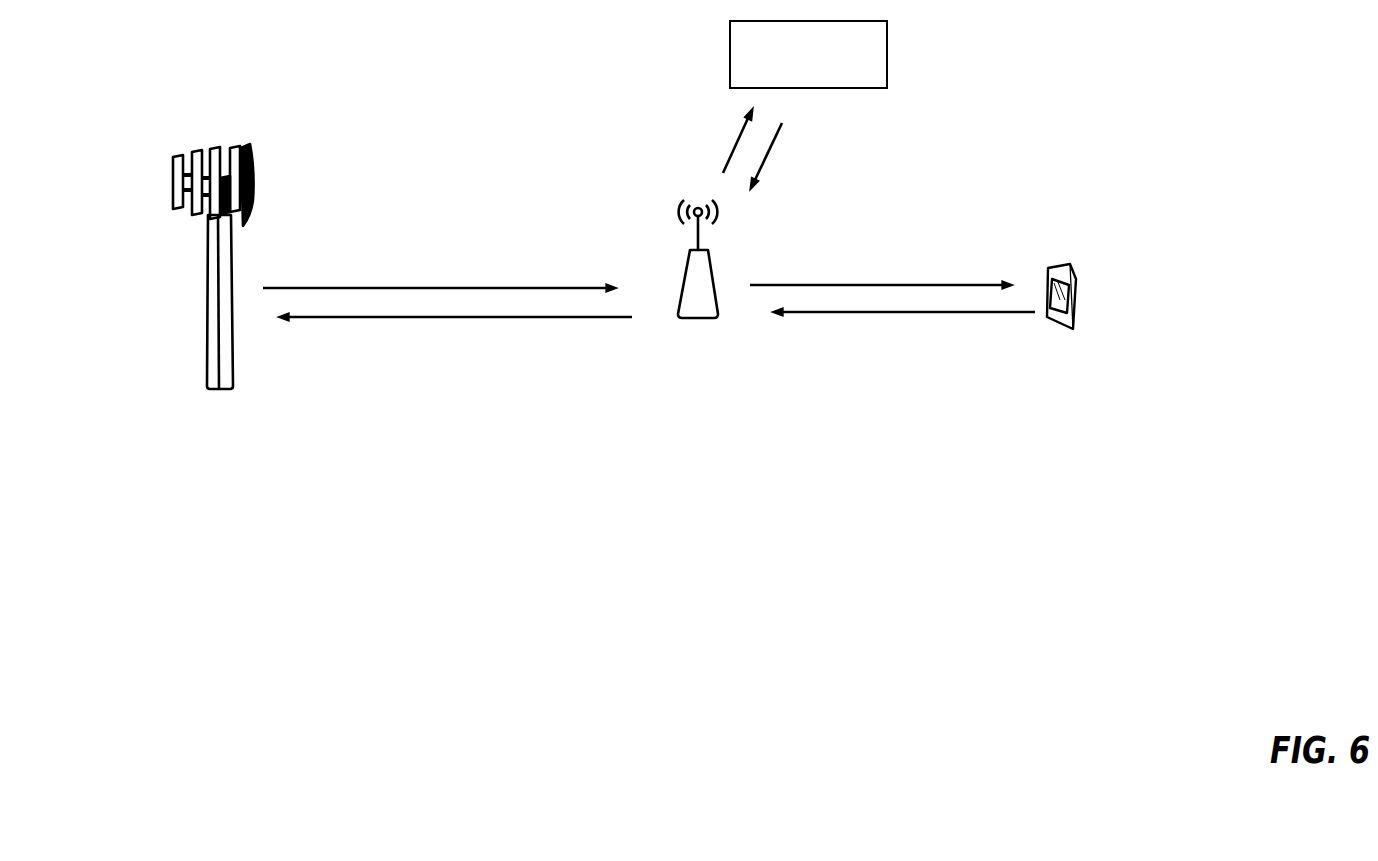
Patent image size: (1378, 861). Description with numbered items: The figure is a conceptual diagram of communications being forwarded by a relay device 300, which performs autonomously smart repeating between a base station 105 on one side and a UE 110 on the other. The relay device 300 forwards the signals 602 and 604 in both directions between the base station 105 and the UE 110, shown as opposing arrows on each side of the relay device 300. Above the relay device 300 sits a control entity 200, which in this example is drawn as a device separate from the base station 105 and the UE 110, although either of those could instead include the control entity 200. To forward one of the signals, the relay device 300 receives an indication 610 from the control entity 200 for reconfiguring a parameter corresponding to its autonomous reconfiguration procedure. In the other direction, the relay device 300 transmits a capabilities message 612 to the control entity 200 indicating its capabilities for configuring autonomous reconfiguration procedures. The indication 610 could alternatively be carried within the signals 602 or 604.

The base station 105 is at (182, 153).
The UE 110 is at (1076, 278).
The control entity 200 is at (823, 80).
The relay device 300 is at (698, 320).
The signal 602 is at (497, 287).
The signal 604 is at (552, 318).
The indication 610 is at (763, 160).
The capabilities message 612 is at (740, 137).